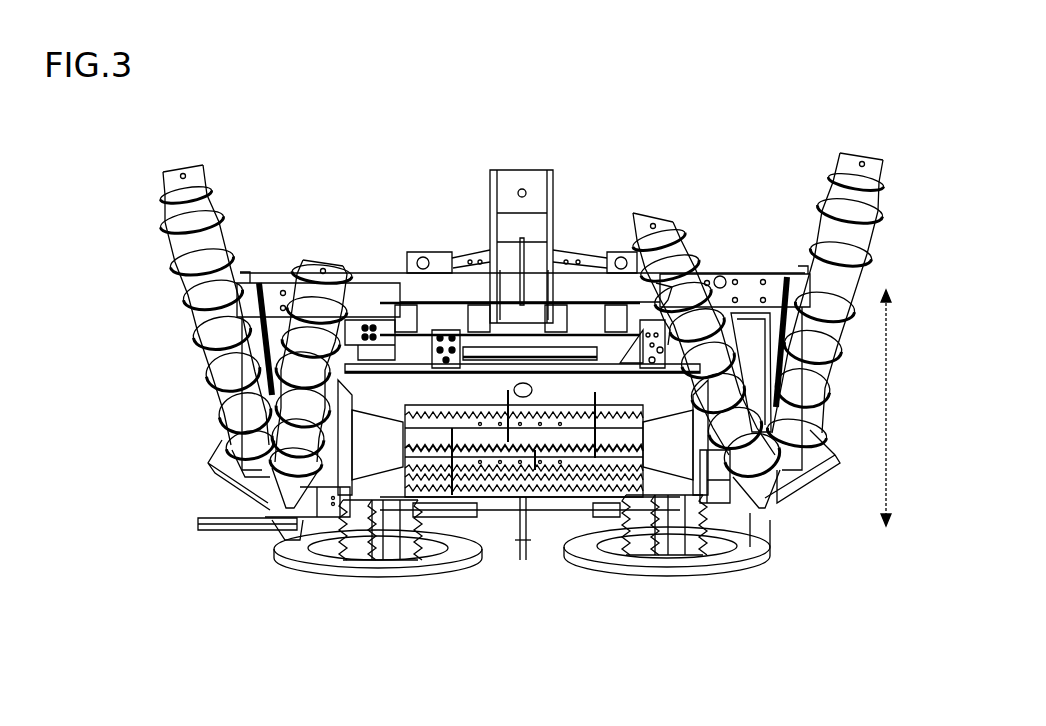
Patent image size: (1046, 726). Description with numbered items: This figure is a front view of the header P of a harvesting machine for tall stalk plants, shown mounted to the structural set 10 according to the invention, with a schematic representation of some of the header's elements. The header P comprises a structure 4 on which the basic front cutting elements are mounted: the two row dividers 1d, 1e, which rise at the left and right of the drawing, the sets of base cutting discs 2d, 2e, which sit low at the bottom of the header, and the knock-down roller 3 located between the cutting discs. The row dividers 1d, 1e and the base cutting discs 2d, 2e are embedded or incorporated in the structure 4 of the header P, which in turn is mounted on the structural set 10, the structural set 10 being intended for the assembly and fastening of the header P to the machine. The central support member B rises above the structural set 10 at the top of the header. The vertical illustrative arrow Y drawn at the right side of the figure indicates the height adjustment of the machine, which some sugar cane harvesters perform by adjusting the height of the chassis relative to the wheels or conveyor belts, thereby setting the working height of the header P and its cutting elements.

The header P is at (268, 186).
The support bracket B is at (452, 190).
The row divider 1e is at (318, 258).
The structural set 10 is at (488, 306).
The structure 4 is at (578, 397).
The row divider 1d is at (658, 224).
The illustrative arrow Y is at (894, 408).
The base cutting disc 2e is at (367, 567).
The knock-down roller 3 is at (496, 497).
The base cutting disc 2d is at (672, 567).